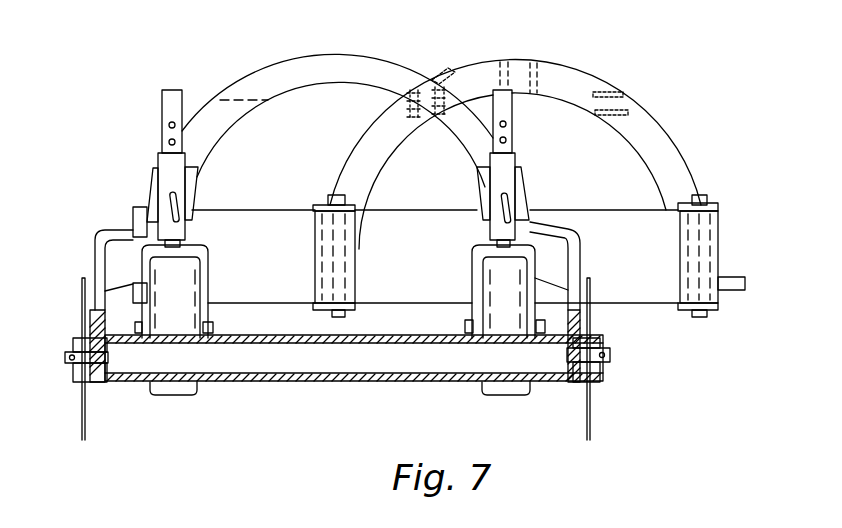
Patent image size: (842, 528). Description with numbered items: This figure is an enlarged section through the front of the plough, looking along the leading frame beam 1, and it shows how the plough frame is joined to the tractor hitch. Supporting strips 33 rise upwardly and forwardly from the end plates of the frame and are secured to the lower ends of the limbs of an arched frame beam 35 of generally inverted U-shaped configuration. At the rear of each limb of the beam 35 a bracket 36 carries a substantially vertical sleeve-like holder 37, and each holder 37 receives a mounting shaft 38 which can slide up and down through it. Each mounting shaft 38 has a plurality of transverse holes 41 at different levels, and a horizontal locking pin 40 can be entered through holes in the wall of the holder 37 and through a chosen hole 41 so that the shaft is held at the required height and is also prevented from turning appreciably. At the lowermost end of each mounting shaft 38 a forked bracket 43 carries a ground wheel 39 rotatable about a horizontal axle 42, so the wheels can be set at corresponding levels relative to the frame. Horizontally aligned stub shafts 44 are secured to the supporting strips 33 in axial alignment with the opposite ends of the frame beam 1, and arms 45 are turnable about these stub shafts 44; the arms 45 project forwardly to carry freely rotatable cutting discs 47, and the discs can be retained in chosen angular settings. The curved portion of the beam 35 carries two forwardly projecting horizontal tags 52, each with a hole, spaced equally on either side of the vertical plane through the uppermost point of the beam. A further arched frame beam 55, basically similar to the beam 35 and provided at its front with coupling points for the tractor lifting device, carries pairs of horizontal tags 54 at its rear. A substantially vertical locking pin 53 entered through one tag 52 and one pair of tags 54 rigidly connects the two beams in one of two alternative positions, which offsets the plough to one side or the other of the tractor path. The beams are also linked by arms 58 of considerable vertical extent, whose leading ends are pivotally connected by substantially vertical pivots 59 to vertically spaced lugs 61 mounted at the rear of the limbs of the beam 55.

The frame beam 1 is at (313, 363).
The supporting strip 33 is at (103, 240).
The arched frame beam 35 is at (335, 46).
The bracket 36 is at (190, 183).
The sleeve-like holder 37 is at (168, 163).
The mounting shaft 38 is at (179, 72).
The ground wheel 39 is at (174, 390).
The locking pin 40 is at (178, 205).
The transverse hole 41 is at (168, 142).
The horizontal axle 42 is at (214, 326).
The forked bracket 43 is at (210, 253).
The stub shaft 44 is at (66, 358).
The arm 45 is at (83, 339).
The cutting disc 47 is at (82, 282).
The tag 52 is at (252, 90).
The locking pin 53 is at (452, 68).
The tag 54 is at (633, 112).
The arched frame beam 55 is at (596, 47).
The arm 58 is at (270, 217).
The pivot 59 is at (333, 200).
The lug 61 is at (357, 208).